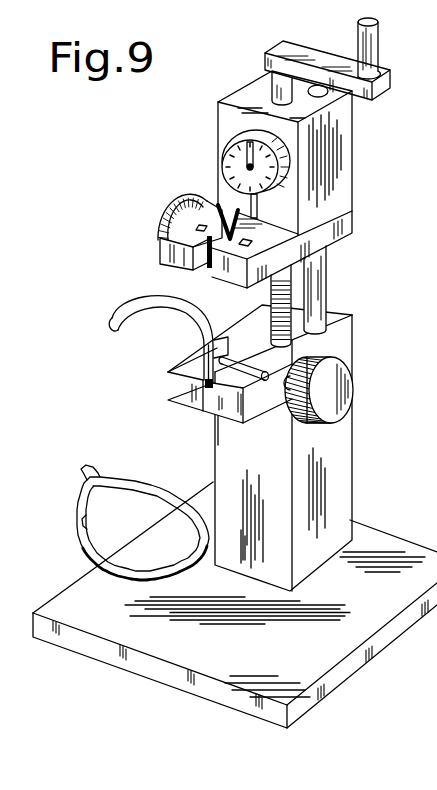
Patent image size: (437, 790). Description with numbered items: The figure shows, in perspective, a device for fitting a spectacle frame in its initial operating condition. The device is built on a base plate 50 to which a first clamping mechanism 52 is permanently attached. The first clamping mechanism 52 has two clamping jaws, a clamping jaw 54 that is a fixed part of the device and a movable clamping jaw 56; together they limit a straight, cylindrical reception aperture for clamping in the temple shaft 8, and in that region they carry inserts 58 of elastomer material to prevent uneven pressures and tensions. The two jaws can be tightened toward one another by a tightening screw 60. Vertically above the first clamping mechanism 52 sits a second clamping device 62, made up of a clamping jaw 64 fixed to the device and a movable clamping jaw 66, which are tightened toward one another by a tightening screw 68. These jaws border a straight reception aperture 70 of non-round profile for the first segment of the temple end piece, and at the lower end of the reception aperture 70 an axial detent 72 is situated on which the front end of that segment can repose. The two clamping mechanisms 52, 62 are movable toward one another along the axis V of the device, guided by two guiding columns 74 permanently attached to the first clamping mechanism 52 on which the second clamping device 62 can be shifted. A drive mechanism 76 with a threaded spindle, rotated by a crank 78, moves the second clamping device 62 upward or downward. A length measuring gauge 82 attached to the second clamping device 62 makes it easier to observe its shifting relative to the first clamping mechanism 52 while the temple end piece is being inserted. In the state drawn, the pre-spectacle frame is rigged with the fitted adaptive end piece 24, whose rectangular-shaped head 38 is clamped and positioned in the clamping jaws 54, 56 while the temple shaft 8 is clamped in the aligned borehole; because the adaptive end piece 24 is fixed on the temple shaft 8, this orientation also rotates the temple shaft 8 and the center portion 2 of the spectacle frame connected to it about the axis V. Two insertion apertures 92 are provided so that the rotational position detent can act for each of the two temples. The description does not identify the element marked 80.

The center portion of the spectacle frame 2 is at (135, 504).
The temple shaft 8 is at (214, 519).
The adaptive end piece 24 is at (147, 344).
The head of the adaptive end piece 38 is at (198, 390).
The base plate 50 is at (302, 660).
The first clamping mechanism 52 is at (223, 408).
The clamping jaw 54 is at (178, 373).
The movable clamping jaw 56 is at (297, 407).
The inserts 58 is at (192, 393).
The tightening screw 60 is at (340, 378).
The second clamping device 62 is at (233, 229).
The clamping jaw 64 is at (322, 252).
The movable clamping jaw 66 is at (162, 254).
The tightening screw 68 is at (178, 205).
The reception aperture 70 is at (257, 230).
The axial detent 72 is at (117, 318).
The guiding columns 74 is at (318, 262).
The drive mechanism 76 is at (306, 53).
The crank 78 is at (371, 42).
The column 80 is at (353, 318).
The length measuring gauge 82 is at (232, 140).
The insertion apertures 92 is at (197, 228).